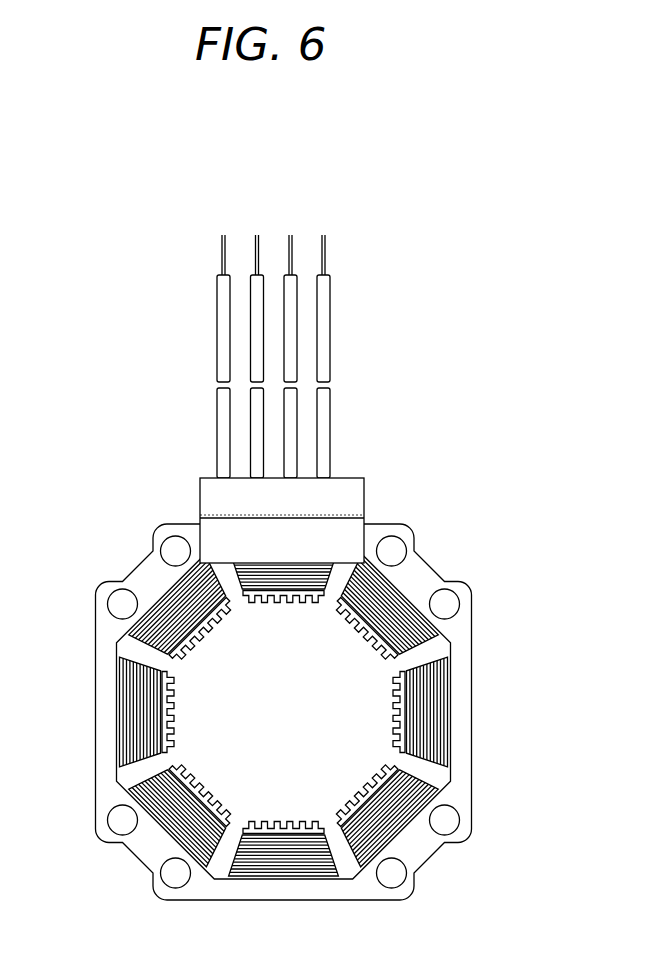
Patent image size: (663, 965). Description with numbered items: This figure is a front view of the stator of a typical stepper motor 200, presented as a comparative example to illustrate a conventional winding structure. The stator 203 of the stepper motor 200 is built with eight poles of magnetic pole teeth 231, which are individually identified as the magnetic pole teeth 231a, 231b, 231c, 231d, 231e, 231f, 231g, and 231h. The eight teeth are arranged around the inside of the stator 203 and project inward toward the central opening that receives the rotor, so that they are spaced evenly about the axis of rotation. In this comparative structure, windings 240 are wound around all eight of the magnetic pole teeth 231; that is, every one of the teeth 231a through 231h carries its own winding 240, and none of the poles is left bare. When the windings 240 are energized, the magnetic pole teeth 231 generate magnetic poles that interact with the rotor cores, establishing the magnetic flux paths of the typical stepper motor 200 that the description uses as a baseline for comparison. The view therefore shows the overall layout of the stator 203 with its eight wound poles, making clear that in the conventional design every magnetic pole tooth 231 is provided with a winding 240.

The stepper motor 200 is at (300, 175).
The stator 203 is at (141, 565).
The magnetic pole teeth 231 is at (335, 674).
The magnetic pole tooth 231a is at (434, 586).
The magnetic pole tooth 231b is at (393, 712).
The magnetic pole tooth 231c is at (378, 809).
The magnetic pole tooth 231d is at (284, 836).
The magnetic pole tooth 231e is at (193, 809).
The magnetic pole tooth 231f is at (174, 712).
The magnetic pole tooth 231g is at (194, 615).
The magnetic pole tooth 231h is at (284, 589).
The windings 240 is at (390, 607).